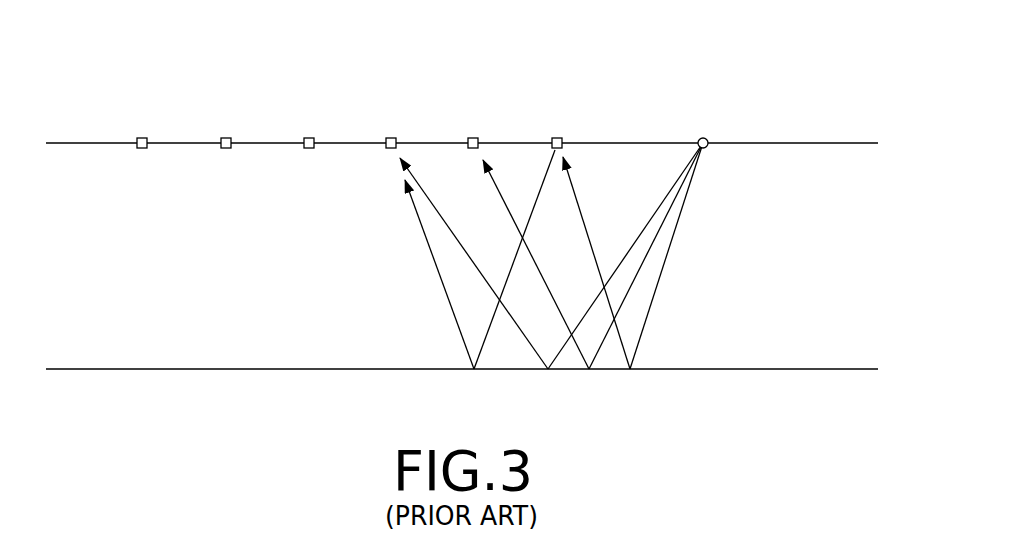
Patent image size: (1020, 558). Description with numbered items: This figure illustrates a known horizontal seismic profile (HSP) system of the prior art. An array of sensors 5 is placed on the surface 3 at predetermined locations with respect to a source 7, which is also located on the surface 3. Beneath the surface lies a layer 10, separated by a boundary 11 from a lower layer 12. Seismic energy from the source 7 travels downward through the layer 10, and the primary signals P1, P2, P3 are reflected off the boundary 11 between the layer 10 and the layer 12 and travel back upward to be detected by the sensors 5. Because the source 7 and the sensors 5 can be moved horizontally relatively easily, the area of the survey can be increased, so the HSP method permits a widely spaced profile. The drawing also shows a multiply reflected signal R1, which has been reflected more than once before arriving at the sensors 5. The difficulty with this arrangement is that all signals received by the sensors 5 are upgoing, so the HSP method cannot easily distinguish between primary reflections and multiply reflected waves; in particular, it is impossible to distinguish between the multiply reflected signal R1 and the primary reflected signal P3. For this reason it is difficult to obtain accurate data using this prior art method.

The surface 3 is at (115, 143).
The sensors 5 is at (470, 138).
The source 7 is at (701, 138).
The layer 10 is at (878, 272).
The boundary 11 is at (153, 369).
The layer 12 is at (878, 435).
The primary signal P1 is at (581, 210).
The primary signal P2 is at (511, 210).
The primary signal P3 is at (437, 210).
The multiply reflected signal R1 is at (425, 243).